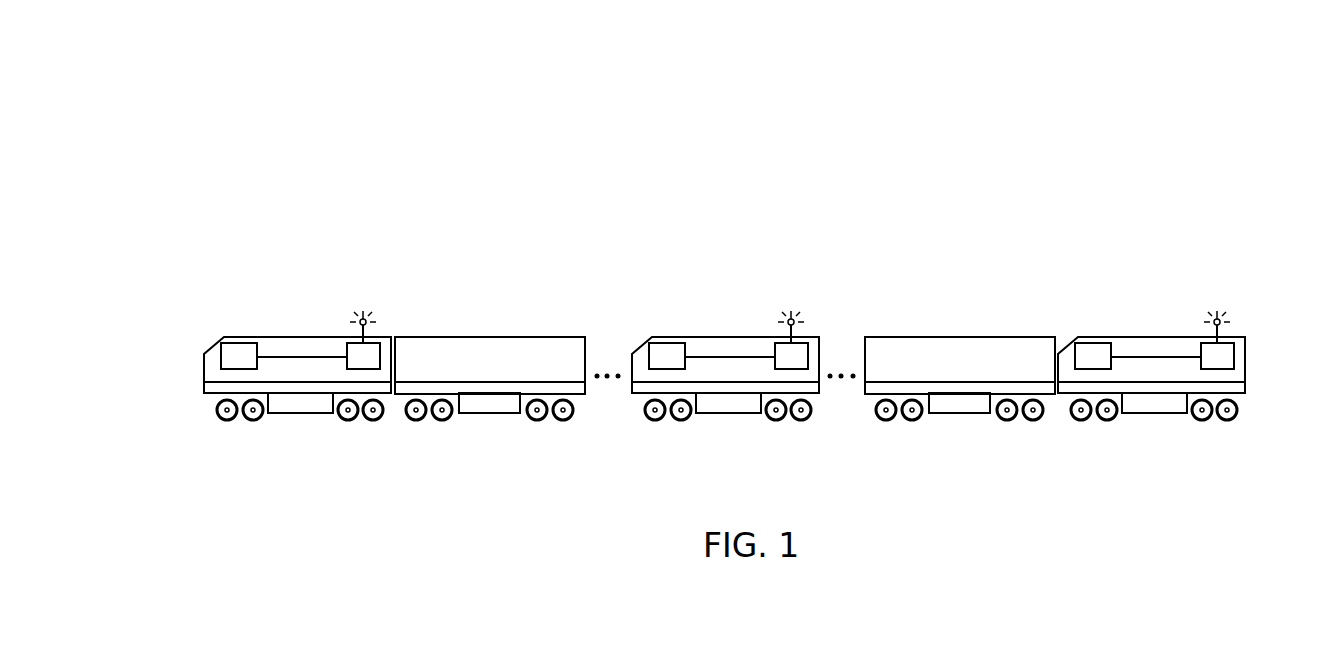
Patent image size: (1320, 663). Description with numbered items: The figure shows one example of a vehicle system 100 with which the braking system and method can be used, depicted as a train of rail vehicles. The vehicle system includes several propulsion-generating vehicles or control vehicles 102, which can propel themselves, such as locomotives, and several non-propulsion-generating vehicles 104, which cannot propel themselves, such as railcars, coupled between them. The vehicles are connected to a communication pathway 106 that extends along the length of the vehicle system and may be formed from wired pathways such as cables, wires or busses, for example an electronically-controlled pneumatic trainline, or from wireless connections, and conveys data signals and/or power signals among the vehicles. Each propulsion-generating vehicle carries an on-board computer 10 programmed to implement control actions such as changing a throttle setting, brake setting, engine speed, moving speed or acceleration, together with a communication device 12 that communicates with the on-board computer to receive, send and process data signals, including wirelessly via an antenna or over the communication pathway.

The vehicle system 100 is at (466, 104).
The on-board computer 10 is at (231, 358).
The propulsion-generating vehicle 102 is at (257, 338).
The communication device 12 is at (381, 352).
The non-propulsion-generating vehicle 104 is at (548, 337).
The communication pathway 106 is at (484, 383).